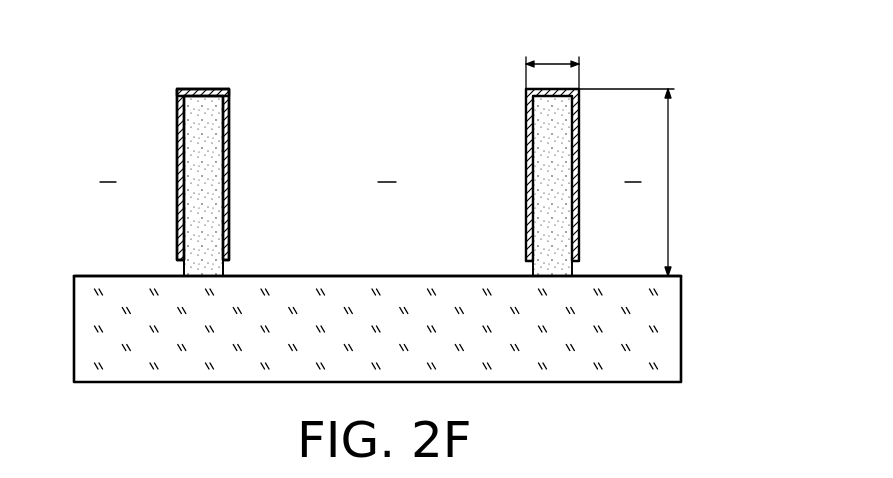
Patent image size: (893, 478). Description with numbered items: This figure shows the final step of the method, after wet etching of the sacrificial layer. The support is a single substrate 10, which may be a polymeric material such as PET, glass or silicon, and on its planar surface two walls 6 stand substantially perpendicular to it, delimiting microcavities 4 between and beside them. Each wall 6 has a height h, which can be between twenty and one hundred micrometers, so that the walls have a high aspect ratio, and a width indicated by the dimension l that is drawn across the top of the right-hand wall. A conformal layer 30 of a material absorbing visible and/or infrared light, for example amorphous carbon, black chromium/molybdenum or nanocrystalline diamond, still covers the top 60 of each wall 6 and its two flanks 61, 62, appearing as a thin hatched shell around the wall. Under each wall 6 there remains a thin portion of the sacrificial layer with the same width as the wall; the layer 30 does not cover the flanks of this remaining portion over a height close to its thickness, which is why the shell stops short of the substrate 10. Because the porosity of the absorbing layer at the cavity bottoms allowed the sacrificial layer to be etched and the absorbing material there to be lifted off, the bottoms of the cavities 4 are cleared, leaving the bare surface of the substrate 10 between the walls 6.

The substrate 10 is at (668, 340).
The microcavity 4 is at (371, 168).
The wall 6 is at (208, 168).
The conformal layer 30 is at (213, 92).
The top of the wall 60 is at (198, 92).
The flank of the wall 61 is at (180, 140).
The flank of the wall 62 is at (228, 135).
The width dimension l is at (552, 63).
The height of the walls h is at (635, 182).